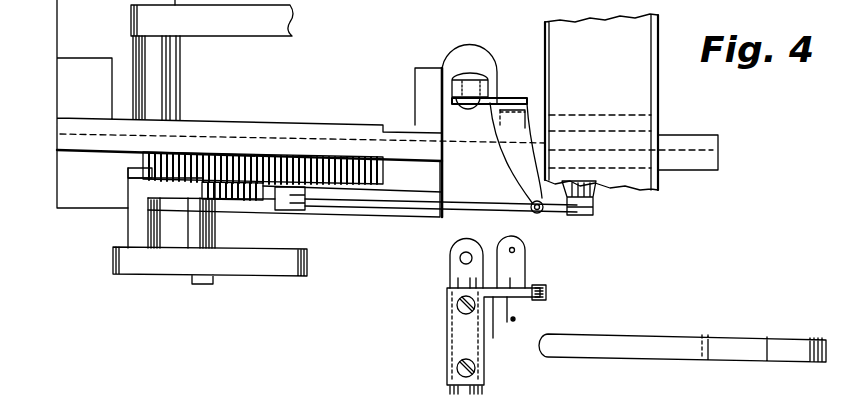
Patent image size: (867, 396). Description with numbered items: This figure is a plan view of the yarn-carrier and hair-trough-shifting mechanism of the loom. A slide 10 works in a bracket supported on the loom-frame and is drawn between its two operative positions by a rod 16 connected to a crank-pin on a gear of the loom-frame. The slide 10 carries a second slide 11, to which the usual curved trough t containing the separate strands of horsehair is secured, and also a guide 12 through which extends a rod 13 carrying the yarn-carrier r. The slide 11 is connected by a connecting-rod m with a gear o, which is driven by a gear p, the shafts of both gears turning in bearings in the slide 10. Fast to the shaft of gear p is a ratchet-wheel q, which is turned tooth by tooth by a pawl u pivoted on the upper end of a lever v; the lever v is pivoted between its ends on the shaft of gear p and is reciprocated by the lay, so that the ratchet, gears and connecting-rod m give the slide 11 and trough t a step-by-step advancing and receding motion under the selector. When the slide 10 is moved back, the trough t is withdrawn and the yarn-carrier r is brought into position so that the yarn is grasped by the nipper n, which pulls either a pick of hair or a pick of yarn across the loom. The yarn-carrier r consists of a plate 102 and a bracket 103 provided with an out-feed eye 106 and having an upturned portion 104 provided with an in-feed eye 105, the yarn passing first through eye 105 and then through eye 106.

The rod 16 is at (258, 37).
The gear p is at (145, 166).
The pawl u is at (168, 188).
The ratchet-wheel q is at (251, 200).
The gear o is at (363, 186).
The connecting-rod m is at (412, 200).
The lever v is at (252, 270).
The slide 11 is at (531, 108).
The guide 12 is at (487, 62).
The rod 13 is at (468, 76).
The upturned portion 104 is at (507, 97).
The bracket 103 is at (508, 174).
The out-feed eye 106 is at (535, 212).
The trough t is at (657, 78).
The slide 10 is at (707, 152).
The plate 102 is at (458, 339).
The in-feed eye 105 is at (517, 250).
The yarn-carrier r is at (509, 320).
The nipper n is at (673, 352).